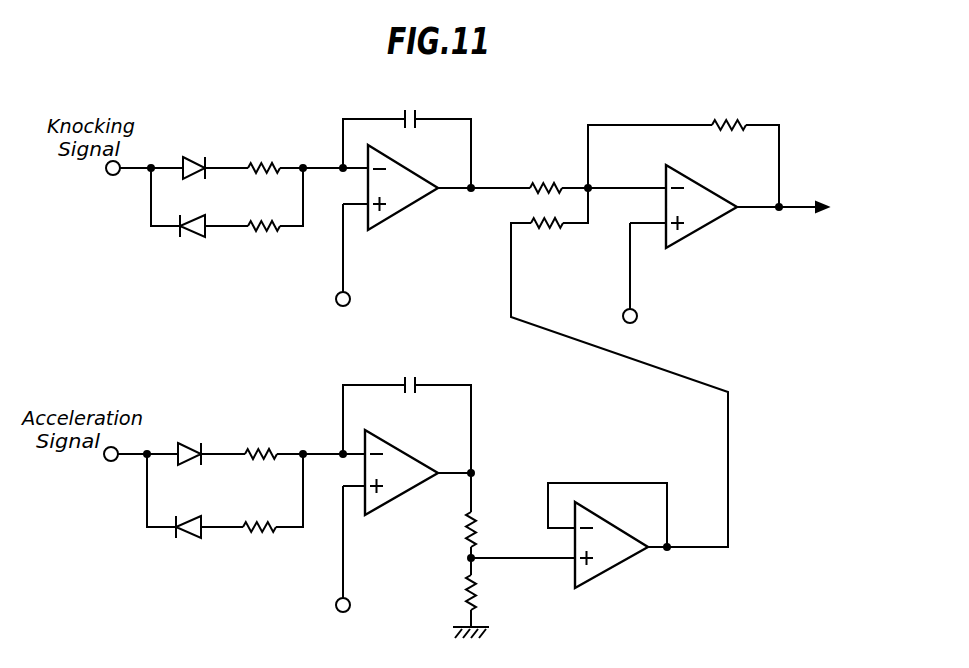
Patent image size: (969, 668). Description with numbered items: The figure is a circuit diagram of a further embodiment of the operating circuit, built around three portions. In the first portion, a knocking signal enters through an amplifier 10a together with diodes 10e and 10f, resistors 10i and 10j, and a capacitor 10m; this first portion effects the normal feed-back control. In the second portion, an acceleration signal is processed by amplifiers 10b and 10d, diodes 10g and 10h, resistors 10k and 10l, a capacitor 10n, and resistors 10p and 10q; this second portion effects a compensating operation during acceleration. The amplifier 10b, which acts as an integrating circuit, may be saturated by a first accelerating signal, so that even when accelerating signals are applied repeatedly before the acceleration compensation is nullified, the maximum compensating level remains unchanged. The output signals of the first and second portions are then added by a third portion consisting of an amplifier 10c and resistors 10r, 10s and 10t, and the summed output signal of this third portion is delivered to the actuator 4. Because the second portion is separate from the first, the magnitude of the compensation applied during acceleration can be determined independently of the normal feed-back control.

The diode 10e is at (191, 157).
The diode 10f is at (192, 238).
The resistor 10i is at (262, 162).
The resistor 10j is at (262, 232).
The amplifier 10a is at (410, 216).
The capacitor 10m is at (404, 115).
The resistor 10r is at (544, 182).
The resistor 10s is at (548, 229).
The resistor 10t is at (723, 120).
The amplifier 10c is at (694, 233).
The actuator 4 is at (816, 231).
The diode 10g is at (189, 443).
The diode 10h is at (188, 539).
The resistor 10k is at (261, 446).
The resistor 10l is at (260, 534).
The amplifier 10b is at (403, 498).
The capacitor 10n is at (414, 383).
The resistor 10p is at (477, 526).
The resistor 10q is at (478, 592).
The amplifier 10d is at (616, 562).